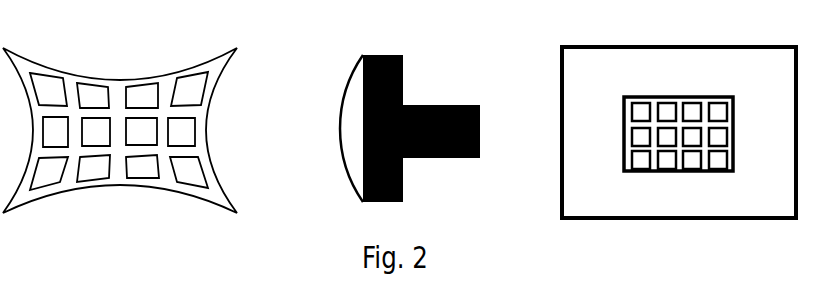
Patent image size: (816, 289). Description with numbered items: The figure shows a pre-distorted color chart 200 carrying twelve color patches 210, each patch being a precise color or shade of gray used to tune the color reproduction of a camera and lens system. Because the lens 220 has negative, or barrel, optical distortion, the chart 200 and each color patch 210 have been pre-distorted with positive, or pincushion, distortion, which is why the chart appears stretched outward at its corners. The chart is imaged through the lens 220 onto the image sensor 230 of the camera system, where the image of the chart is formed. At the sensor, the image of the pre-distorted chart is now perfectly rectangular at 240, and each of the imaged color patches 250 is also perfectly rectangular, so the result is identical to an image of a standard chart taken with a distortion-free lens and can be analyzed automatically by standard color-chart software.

The pre-distorted color chart 200 is at (120, 126).
The color patch 210 is at (188, 175).
The lens 220 is at (410, 128).
The image sensor 230 is at (679, 120).
The image of the pre-distorted chart 240 is at (688, 139).
The imaged color patch 250 is at (715, 160).